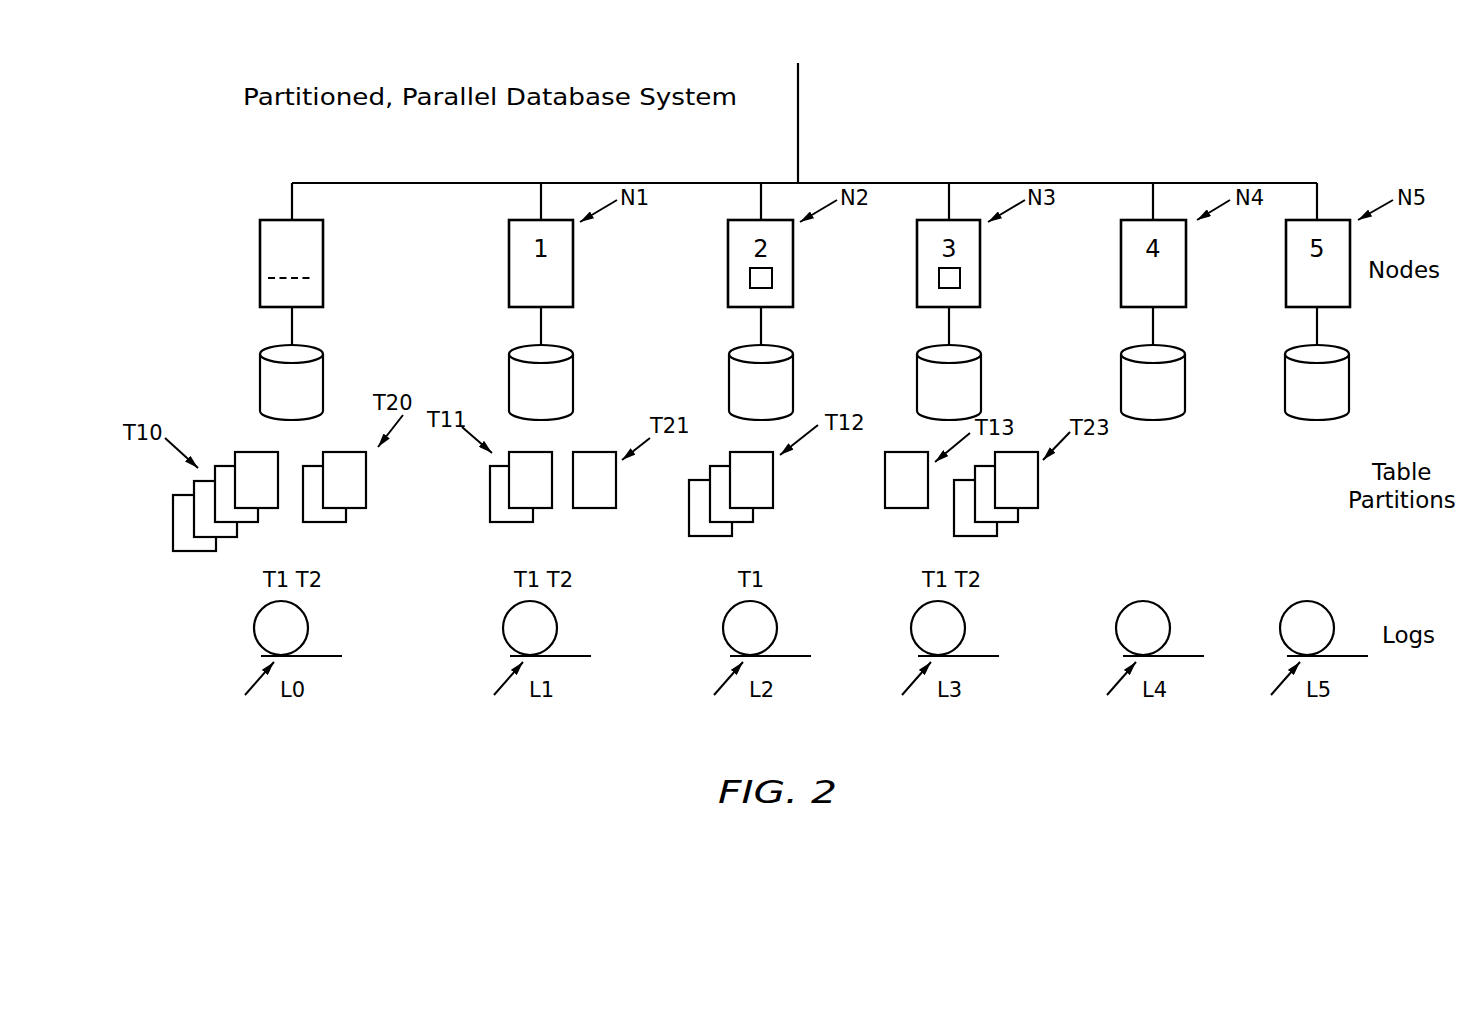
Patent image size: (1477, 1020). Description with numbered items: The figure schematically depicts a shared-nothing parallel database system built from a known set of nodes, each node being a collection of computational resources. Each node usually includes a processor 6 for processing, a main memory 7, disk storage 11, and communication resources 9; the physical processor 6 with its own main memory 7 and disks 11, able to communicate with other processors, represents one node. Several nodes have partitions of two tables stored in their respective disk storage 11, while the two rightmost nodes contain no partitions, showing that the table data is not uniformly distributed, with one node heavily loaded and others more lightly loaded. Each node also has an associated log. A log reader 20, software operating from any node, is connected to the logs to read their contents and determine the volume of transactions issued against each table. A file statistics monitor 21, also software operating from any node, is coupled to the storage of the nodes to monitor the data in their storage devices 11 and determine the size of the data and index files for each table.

The communication resources 9 is at (817, 90).
The processor 6 is at (257, 248).
The main memory 7 is at (257, 297).
The disk storage 11 is at (340, 360).
The log reader 20 is at (972, 273).
The file statistics monitor 21 is at (785, 273).